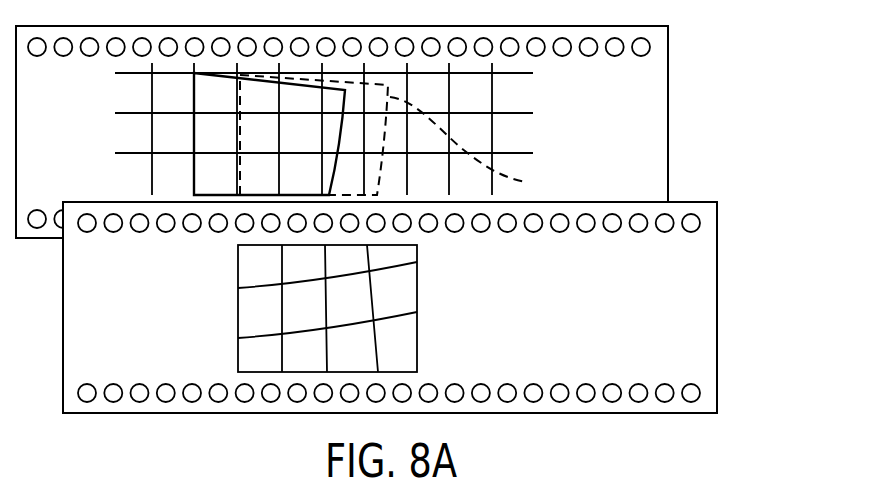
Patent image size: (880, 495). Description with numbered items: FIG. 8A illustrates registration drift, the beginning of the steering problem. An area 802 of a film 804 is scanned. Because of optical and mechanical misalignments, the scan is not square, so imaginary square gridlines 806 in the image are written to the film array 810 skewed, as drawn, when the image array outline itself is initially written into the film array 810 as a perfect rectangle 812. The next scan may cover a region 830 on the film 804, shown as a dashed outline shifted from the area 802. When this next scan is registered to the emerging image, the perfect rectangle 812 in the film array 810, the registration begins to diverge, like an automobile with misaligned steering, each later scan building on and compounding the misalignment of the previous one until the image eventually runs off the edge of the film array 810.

The area 802 is at (193, 88).
The film 804 is at (668, 68).
The imaginary square gridlines 806 is at (470, 112).
The film array 810 is at (717, 293).
The perfect rectangle 812 is at (417, 275).
The region 830 is at (480, 147).